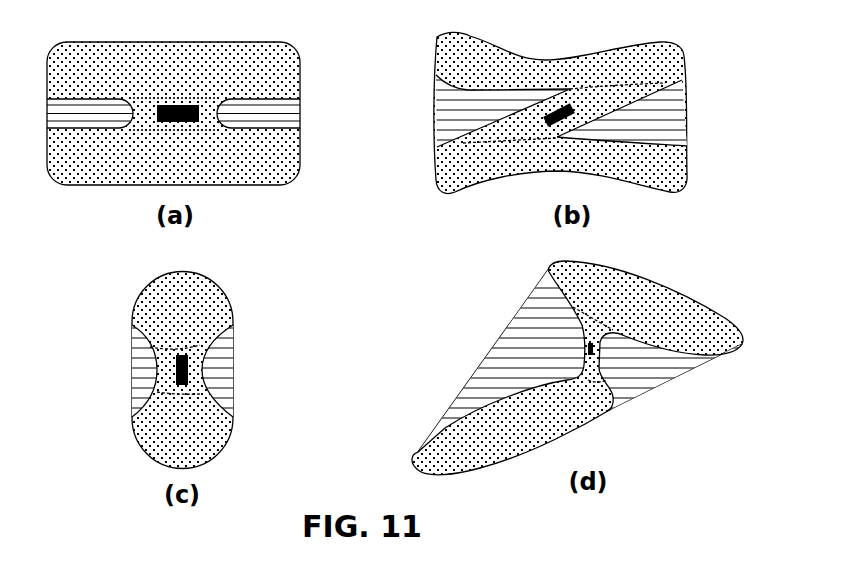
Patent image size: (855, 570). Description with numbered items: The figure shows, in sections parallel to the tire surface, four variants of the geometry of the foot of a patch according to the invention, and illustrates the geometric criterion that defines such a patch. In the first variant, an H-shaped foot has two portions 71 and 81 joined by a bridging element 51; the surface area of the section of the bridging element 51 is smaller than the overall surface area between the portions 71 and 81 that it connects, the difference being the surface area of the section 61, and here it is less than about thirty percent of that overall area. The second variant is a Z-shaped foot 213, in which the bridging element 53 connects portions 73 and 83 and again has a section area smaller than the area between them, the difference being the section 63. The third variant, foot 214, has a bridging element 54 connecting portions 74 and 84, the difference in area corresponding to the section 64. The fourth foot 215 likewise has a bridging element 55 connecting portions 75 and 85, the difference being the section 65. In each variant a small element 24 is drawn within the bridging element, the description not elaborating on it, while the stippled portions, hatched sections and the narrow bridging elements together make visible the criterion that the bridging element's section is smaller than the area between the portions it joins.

The gate/active connection element 24 is at (182, 100).
The bridging element 51 is at (210, 118).
The section 61 is at (75, 123).
The portion of the foot 71 is at (240, 78).
The portion of the foot 81 is at (240, 167).
The Z-shaped foot 213 is at (705, 41).
The bridging element 53 is at (640, 97).
The section 63 is at (460, 119).
The portion of the foot 73 is at (620, 76).
The portion of the foot 83 is at (643, 181).
The foot 214 is at (261, 286).
The bridging element 54 is at (199, 358).
The section 64 is at (147, 375).
The portion of the foot 74 is at (170, 314).
The portion of the foot 84 is at (170, 438).
The fourth foot 215 is at (727, 264).
The bridging element 55 is at (603, 373).
The section 65 is at (521, 369).
The portion of the foot 75 is at (623, 318).
The portion of the foot 85 is at (498, 440).